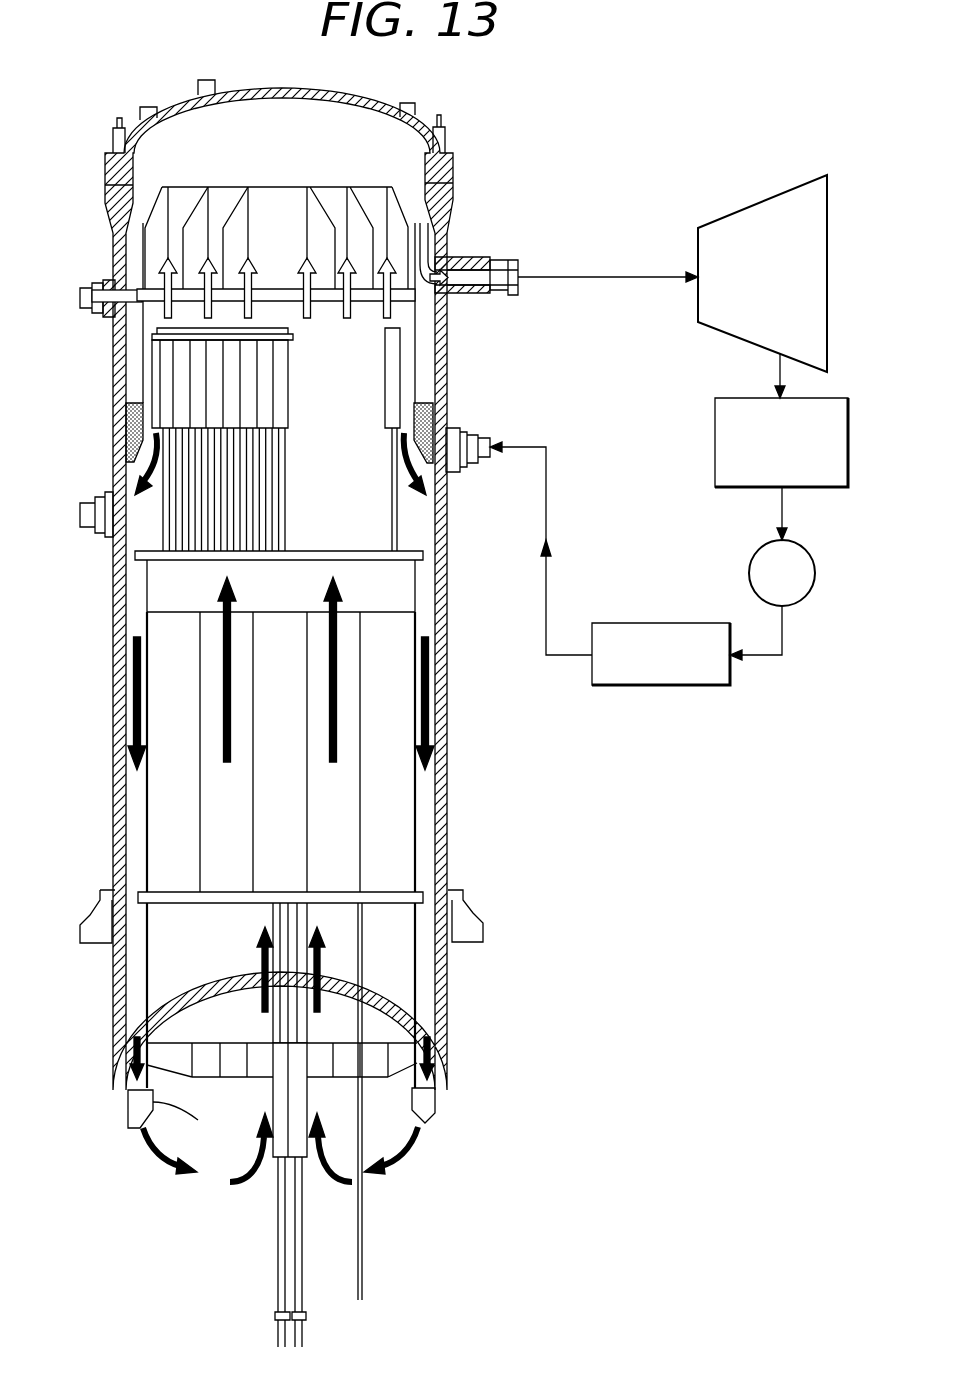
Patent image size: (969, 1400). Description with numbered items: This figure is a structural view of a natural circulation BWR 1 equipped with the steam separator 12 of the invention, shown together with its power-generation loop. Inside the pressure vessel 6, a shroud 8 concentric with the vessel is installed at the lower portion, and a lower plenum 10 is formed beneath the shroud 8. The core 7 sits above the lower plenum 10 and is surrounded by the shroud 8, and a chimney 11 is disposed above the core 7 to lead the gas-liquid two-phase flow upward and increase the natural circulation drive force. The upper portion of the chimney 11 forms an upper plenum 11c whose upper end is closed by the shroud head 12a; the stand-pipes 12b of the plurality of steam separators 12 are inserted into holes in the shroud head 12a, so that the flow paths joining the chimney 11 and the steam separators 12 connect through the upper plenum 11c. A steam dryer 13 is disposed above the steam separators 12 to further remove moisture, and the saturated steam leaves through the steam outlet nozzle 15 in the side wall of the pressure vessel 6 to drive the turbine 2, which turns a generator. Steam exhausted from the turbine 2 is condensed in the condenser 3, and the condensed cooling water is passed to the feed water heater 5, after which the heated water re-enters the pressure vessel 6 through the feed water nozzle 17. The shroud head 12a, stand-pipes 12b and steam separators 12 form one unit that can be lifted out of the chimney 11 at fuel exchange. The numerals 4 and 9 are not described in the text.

The natural circulation BWR 1 is at (465, 122).
The turbine 2 is at (760, 216).
The condenser 3 is at (810, 470).
The feed water pump 4 is at (795, 590).
The feed water heater 5 is at (657, 630).
The pressure vessel 6 is at (443, 718).
The core 7 is at (393, 980).
The shroud 8 is at (418, 950).
The downcomer 9 is at (137, 858).
The lower plenum 10 is at (118, 1133).
The chimney 11 is at (421, 842).
The upper plenum 11c is at (162, 592).
The steam separator 12 is at (397, 385).
The shroud head 12a is at (135, 554).
The stand-pipe 12b is at (397, 503).
The steam dryer 13 is at (403, 192).
The steam outlet nozzle 15 is at (481, 291).
The feed water nozzle 17 is at (475, 433).